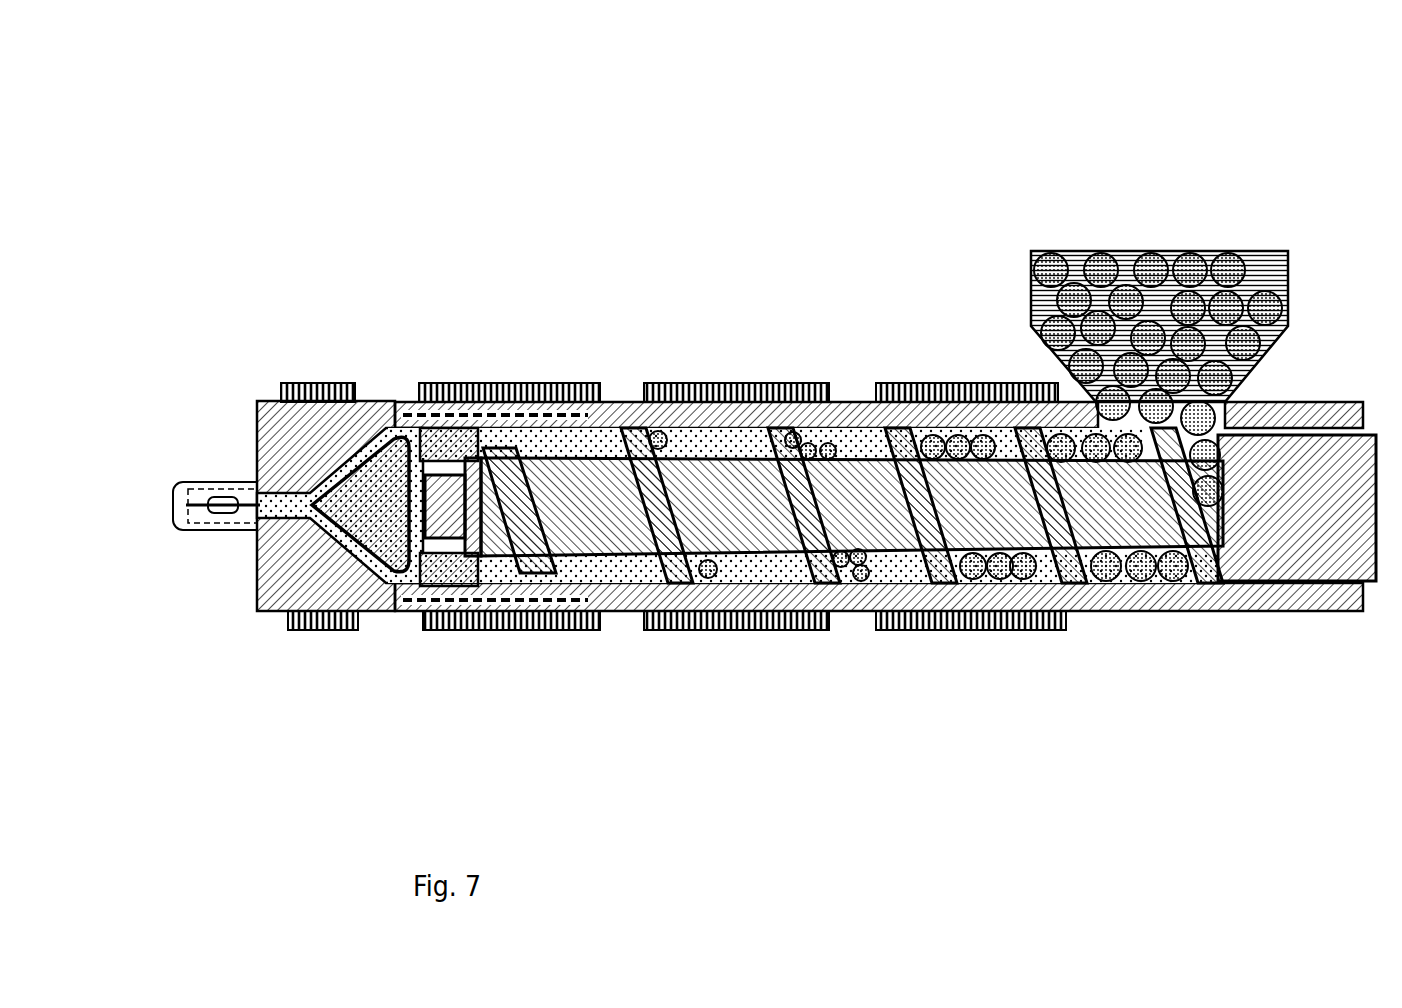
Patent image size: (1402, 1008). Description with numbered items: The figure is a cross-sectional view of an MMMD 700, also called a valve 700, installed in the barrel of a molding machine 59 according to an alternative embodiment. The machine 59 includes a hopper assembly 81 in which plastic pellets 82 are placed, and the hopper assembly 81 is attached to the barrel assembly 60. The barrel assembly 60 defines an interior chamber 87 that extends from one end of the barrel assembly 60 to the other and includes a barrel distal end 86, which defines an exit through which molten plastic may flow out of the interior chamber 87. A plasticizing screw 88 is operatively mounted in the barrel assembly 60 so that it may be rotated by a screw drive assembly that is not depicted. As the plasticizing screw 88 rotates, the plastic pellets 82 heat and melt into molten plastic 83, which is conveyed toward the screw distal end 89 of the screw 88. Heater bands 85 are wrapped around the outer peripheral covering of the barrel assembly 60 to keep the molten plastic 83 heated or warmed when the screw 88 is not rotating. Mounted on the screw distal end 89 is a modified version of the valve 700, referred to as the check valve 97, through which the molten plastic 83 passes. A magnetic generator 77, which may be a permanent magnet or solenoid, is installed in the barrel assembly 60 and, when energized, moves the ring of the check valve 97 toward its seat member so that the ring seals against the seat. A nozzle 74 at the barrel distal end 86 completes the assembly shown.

The molding machine 59 is at (1174, 228).
The barrel assembly 60 is at (803, 481).
The nozzle 74 is at (202, 470).
The magnetic generator 77 is at (477, 617).
The hopper assembly 81 is at (1270, 245).
The plastic pellets 82 is at (1032, 245).
The molten plastic 83 is at (850, 437).
The heater bands 85 is at (868, 617).
The barrel distal end 86 is at (275, 425).
The interior chamber 87 is at (718, 438).
The plasticizing screw 88 is at (998, 515).
The screw distal end 89 is at (490, 470).
The check valve 97 is at (368, 503).
The MMMD (valve) 700 is at (773, 455).